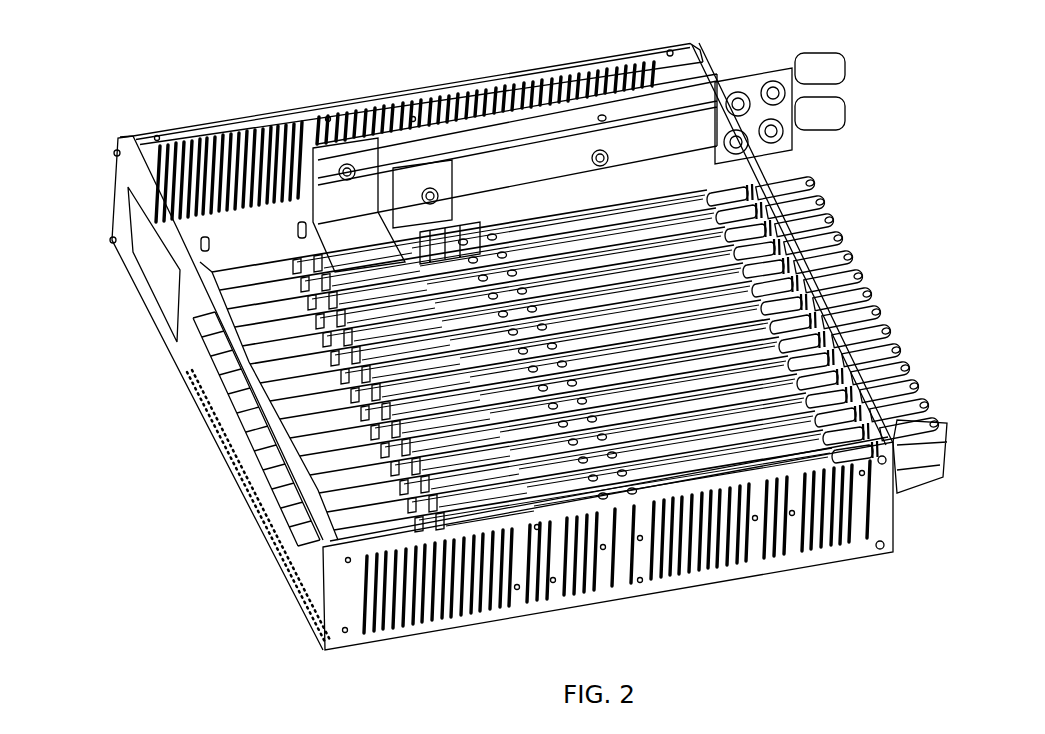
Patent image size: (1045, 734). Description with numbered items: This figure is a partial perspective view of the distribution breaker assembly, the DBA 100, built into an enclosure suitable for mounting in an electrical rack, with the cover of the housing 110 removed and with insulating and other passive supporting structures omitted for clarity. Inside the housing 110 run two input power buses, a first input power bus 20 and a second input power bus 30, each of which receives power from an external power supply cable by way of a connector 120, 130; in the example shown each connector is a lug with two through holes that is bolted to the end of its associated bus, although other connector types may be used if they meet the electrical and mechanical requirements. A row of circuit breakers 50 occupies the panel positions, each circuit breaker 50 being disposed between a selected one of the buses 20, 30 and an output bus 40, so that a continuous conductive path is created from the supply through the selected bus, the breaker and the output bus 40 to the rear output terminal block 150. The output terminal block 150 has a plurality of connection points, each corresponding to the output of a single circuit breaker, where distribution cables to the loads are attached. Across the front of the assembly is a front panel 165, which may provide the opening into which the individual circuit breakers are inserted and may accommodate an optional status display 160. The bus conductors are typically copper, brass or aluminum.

The DBA 100 is at (371, 67).
The housing 110 is at (560, 62).
The first input power bus 20 is at (672, 117).
The second input power bus 30 is at (643, 152).
The output bus 40 is at (550, 267).
The circuit breaker 50 is at (240, 441).
The connector 120 is at (834, 67).
The connector 130 is at (834, 111).
The output terminal block 150 is at (867, 275).
The status display 160 is at (165, 288).
The front panel 165 is at (120, 190).